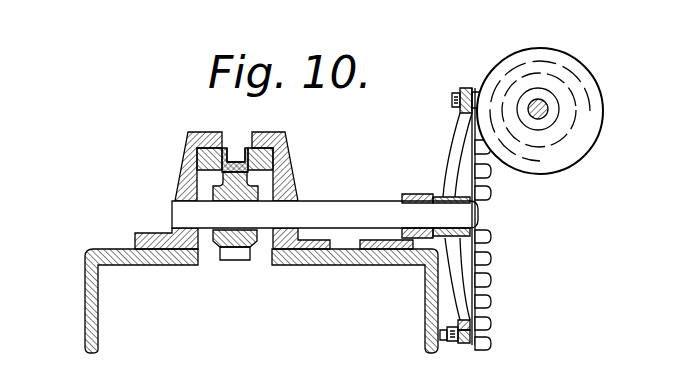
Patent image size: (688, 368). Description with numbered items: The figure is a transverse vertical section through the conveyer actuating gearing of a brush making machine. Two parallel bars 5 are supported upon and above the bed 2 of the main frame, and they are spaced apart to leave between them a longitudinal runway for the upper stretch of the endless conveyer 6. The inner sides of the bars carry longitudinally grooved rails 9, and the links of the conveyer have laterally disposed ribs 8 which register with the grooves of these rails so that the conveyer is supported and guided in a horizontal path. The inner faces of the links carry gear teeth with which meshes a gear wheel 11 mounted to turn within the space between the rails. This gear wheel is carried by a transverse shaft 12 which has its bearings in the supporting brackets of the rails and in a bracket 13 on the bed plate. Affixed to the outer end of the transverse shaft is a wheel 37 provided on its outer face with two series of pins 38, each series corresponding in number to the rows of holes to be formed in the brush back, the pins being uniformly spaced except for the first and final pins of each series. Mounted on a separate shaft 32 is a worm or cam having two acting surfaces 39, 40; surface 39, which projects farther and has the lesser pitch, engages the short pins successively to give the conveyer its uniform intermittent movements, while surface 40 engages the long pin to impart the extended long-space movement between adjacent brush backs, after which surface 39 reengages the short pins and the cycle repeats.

The bed 2 is at (85, 272).
The bars 5 is at (188, 137).
The conveyer 6 is at (223, 177).
The ribs 8 is at (241, 152).
The grooved rails 9 is at (197, 153).
The gear wheel 11 is at (236, 262).
The transverse shaft 12 is at (332, 212).
The bracket 13 is at (408, 194).
The shaft 32 is at (548, 112).
The wheel 37 is at (456, 147).
The pins 38 is at (492, 216).
The cam surface 39 is at (553, 48).
The cam surface 40 is at (505, 84).